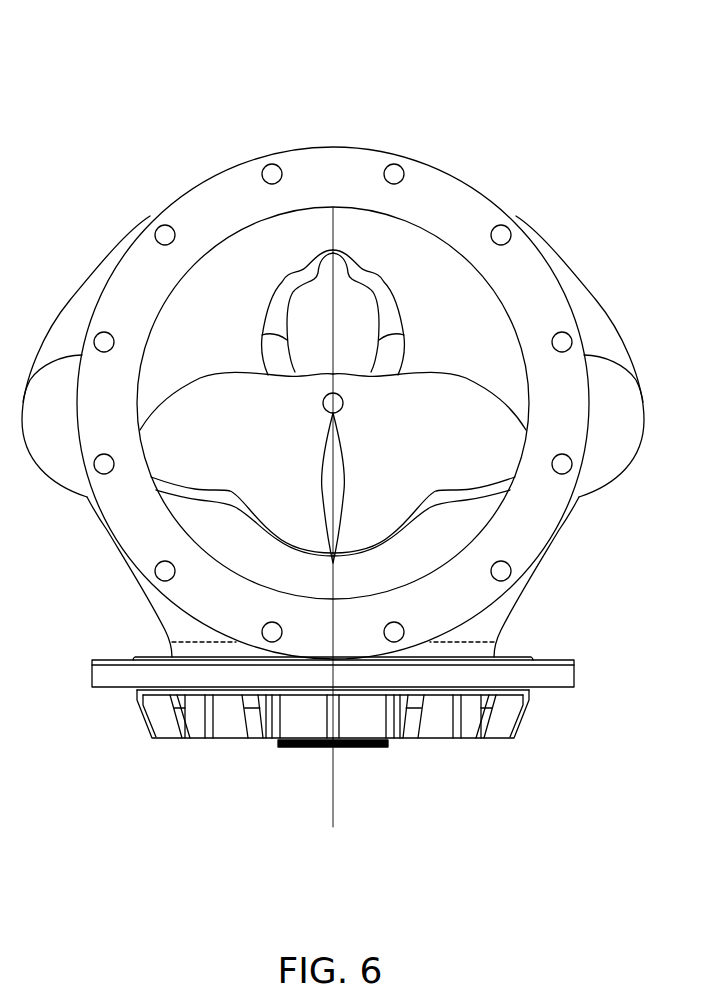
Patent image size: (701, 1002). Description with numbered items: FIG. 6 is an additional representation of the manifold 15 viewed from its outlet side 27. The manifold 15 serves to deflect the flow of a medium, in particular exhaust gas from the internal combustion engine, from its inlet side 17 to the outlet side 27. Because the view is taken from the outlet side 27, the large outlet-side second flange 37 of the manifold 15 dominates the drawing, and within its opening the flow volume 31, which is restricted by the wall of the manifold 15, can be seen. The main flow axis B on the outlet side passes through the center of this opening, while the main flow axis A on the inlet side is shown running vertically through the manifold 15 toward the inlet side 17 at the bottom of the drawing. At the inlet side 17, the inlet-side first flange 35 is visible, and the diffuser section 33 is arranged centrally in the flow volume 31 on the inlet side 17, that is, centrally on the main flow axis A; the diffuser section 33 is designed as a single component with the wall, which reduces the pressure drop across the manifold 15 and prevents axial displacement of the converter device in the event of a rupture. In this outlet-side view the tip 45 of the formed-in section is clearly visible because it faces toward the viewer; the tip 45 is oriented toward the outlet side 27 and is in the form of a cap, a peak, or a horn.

The manifold 15 is at (493, 93).
The outlet side 27 is at (340, 146).
The second flange 37 is at (470, 203).
The flow volume 31 is at (432, 319).
The tip 45 is at (331, 477).
The first flange 35 is at (555, 690).
The inlet side 17 is at (470, 753).
The diffuser section 33 is at (297, 748).
The main flow axis on the inlet side A is at (333, 817).
The main flow axis on the outlet side B is at (344, 403).